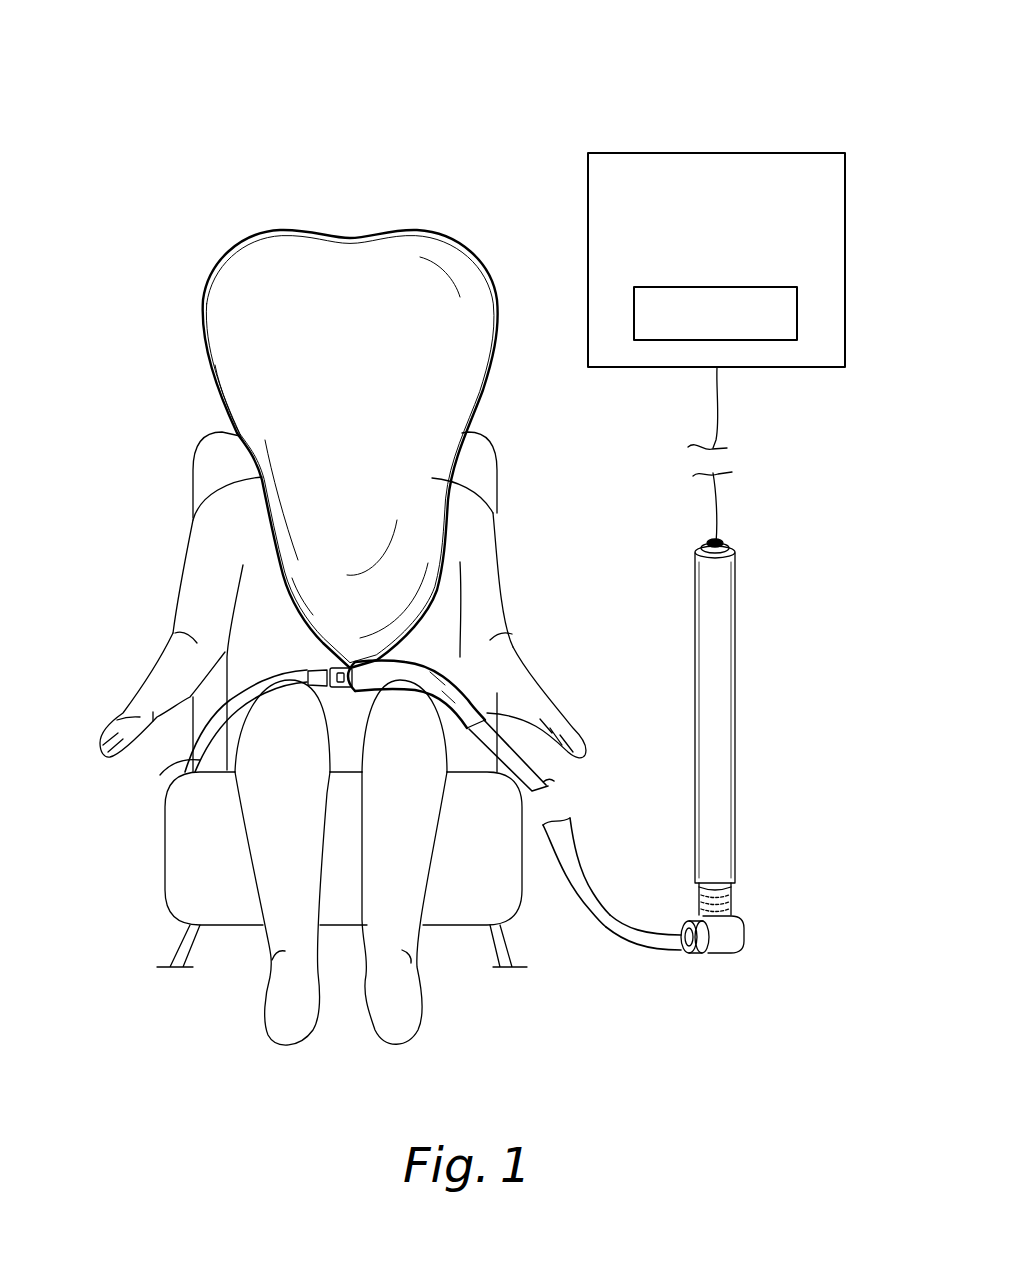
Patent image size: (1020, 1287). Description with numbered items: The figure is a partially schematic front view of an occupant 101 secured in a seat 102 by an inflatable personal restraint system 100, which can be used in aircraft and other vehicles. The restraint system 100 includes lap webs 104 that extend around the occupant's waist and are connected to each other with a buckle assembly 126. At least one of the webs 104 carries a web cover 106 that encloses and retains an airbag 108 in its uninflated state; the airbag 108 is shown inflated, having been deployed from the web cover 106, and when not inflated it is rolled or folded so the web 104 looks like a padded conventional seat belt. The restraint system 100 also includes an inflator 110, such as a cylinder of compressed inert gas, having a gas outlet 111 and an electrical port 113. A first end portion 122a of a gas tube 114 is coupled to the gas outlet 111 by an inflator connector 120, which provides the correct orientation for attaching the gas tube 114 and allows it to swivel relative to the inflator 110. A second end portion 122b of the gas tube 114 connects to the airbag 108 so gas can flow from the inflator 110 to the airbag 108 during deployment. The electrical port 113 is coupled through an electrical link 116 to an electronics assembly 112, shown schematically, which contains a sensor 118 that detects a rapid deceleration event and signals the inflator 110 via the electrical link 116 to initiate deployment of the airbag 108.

The inflatable personal restraint system 100 is at (422, 78).
The occupant 101 is at (263, 1005).
The seat 102 is at (163, 860).
The web 104 is at (167, 762).
The web cover 106 is at (442, 630).
The airbag 108 is at (250, 233).
The inflator 110 is at (728, 682).
The gas outlet 111 is at (733, 897).
The electronics assembly 112 is at (746, 244).
The electrical port 113 is at (722, 540).
The gas tube 114 is at (585, 877).
The electrical link 116 is at (718, 412).
The sensor 118 is at (797, 314).
The inflator connector 120 is at (733, 908).
The first end portion 122a is at (667, 950).
The second end portion 122b is at (473, 713).
The buckle assembly 126 is at (303, 657).